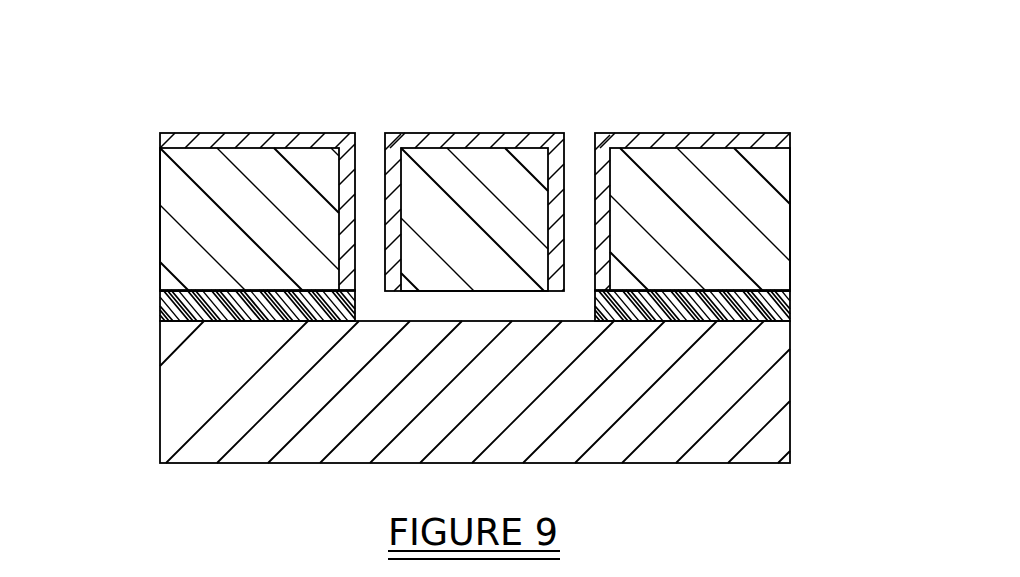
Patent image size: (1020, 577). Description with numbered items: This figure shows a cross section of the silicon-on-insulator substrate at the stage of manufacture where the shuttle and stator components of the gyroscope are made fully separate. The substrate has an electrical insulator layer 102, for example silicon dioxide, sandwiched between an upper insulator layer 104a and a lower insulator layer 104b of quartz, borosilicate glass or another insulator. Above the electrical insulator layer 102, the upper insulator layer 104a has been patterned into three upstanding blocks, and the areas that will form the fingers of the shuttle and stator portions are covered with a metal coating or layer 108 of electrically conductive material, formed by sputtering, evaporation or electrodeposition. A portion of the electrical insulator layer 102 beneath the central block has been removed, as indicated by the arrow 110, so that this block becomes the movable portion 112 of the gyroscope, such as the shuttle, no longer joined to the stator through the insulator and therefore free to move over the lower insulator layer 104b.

The electrical insulator layer 102 is at (215, 300).
The insulator layer 104a is at (220, 188).
The insulator layer 104b is at (195, 420).
The metal coating or layer 108 is at (283, 140).
The arrow 110 is at (472, 300).
The movable portion 112 is at (486, 108).